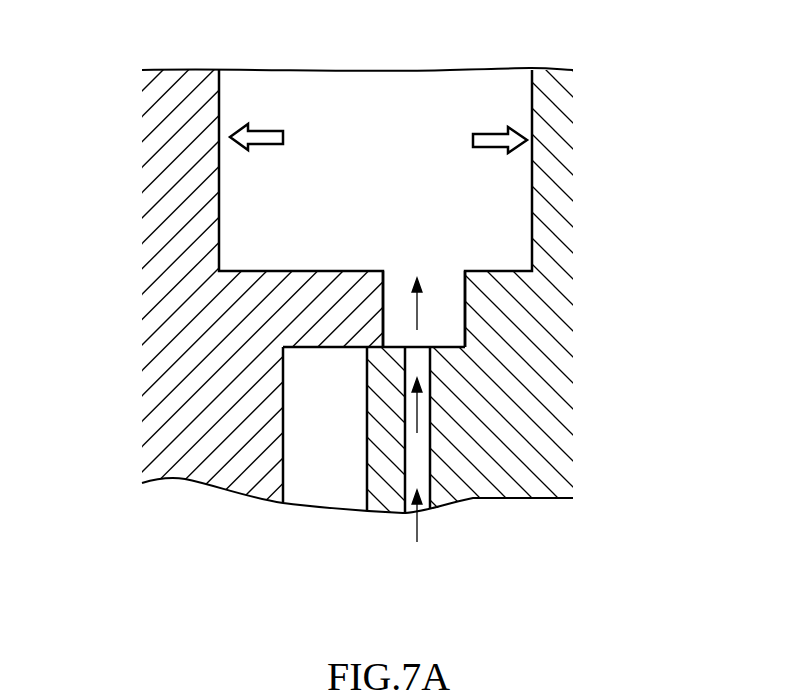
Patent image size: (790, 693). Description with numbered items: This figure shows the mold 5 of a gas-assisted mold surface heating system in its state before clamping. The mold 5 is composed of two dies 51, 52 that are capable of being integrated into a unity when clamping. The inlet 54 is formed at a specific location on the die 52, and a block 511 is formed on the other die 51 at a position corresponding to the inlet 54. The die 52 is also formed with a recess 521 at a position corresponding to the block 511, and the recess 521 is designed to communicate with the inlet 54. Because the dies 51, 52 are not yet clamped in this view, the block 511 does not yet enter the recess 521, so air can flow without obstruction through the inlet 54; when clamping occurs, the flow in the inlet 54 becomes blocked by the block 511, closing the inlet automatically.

The mold 5 is at (395, 300).
The die 51 is at (395, 313).
The block 511 is at (332, 325).
The die 52 is at (510, 291).
The recess 521 is at (465, 303).
The inlet 54 is at (423, 452).